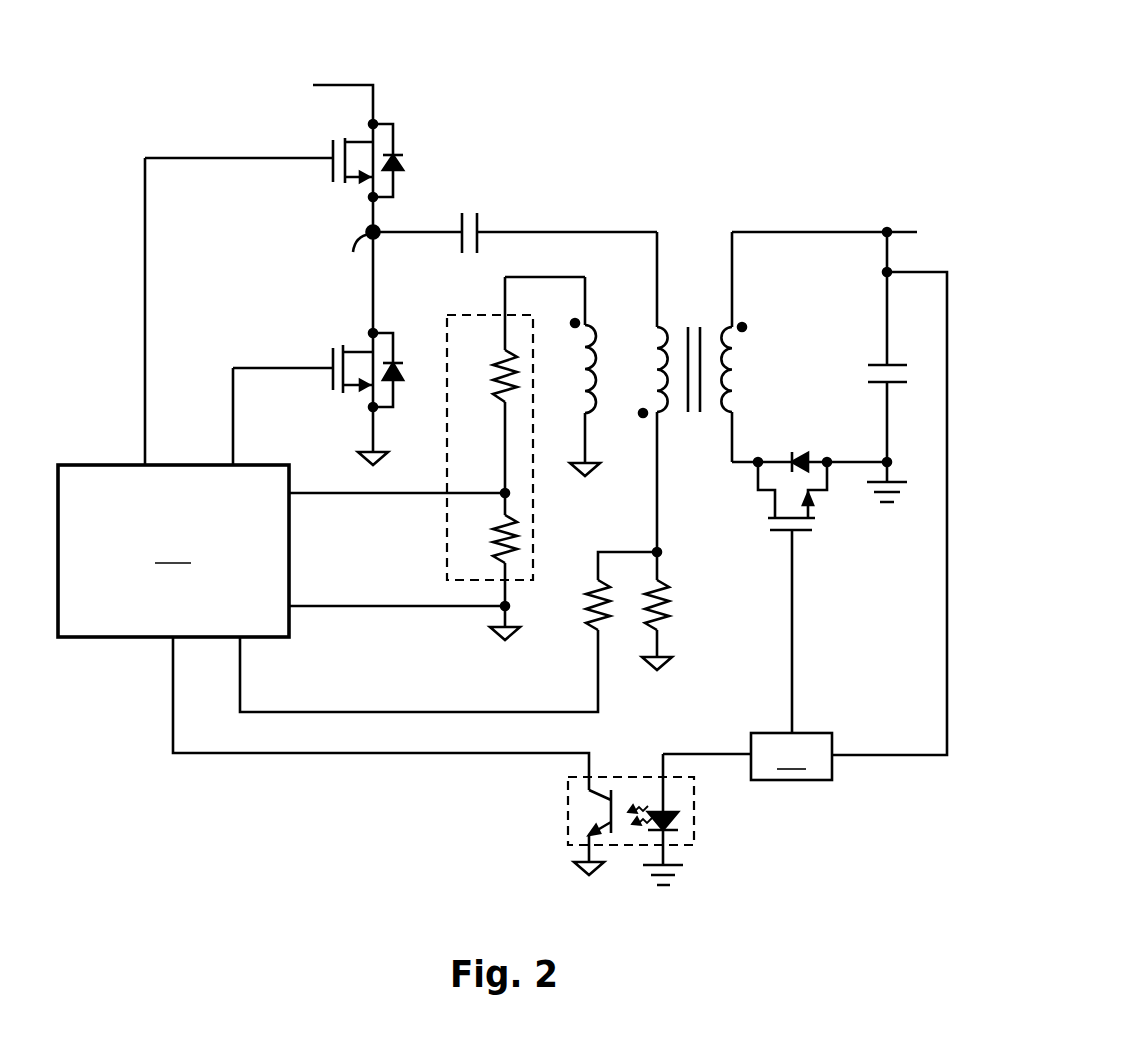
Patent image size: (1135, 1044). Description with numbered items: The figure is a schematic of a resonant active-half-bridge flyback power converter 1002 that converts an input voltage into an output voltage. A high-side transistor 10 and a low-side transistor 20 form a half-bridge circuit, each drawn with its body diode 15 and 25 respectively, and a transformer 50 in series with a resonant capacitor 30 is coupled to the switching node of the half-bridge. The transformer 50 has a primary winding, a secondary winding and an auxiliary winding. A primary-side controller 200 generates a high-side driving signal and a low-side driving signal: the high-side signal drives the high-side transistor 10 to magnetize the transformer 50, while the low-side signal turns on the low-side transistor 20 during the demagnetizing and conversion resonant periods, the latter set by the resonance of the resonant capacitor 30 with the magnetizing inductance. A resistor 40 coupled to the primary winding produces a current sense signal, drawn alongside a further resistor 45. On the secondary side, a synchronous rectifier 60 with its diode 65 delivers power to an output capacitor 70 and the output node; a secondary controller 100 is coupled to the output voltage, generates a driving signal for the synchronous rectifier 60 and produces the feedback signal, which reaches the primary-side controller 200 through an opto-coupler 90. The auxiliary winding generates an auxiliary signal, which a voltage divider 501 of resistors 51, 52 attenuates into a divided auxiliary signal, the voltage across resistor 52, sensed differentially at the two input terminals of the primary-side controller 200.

The resonant AHB flyback power converter 1002 is at (448, 38).
The high-side transistor 10 is at (323, 176).
The body diode of high-side switch 15 is at (403, 160).
The low-side transistor 20 is at (323, 383).
The body diode of low-side switch 25 is at (403, 370).
The resonant capacitor 30 is at (465, 210).
The resistor 40 is at (674, 604).
The sense resistor 45 is at (581, 605).
The transformer 50 is at (703, 207).
The resistor 51 is at (489, 376).
The resistor 52 is at (487, 539).
The voltage divider 501 is at (478, 316).
The synchronous rectifier 60 is at (803, 533).
The rectifier diode 65 is at (797, 448).
The output capacitor 70 is at (871, 375).
The opto-coupler 90 is at (693, 808).
The secondary controller 100 is at (791, 756).
The primary-side controller 200 is at (173, 551).